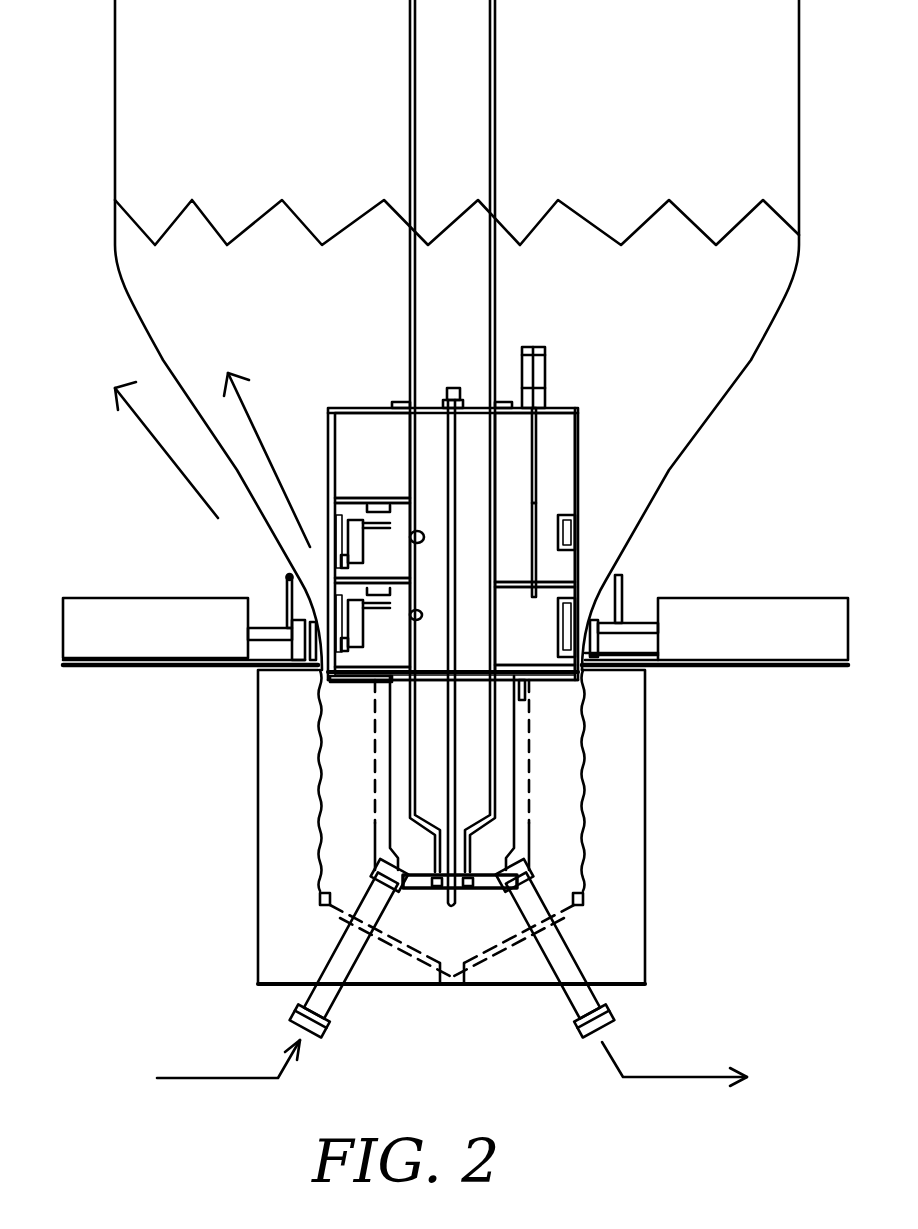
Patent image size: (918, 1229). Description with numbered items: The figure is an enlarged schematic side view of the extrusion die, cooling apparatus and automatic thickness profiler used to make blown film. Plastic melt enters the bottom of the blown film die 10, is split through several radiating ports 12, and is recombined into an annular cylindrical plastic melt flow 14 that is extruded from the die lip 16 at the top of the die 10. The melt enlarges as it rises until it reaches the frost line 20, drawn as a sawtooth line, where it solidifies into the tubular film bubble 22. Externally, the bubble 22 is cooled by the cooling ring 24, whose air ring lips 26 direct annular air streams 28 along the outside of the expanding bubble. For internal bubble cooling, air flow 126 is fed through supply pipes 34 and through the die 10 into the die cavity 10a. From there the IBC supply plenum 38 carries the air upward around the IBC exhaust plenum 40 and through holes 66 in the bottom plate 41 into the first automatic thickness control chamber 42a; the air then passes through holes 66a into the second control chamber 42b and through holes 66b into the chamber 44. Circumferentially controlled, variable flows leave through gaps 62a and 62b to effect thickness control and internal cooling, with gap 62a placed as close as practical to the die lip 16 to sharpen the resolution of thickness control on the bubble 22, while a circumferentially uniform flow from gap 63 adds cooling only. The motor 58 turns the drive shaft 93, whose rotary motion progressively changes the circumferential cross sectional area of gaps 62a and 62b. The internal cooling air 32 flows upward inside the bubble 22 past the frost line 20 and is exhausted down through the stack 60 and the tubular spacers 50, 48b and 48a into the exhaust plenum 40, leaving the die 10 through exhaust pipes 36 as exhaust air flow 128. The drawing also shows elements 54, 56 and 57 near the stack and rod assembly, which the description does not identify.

The blown film die 10 is at (648, 810).
The die cavity 10a is at (375, 823).
The ports 12 is at (335, 912).
The annular cylindrical plastic melt flow 14 is at (322, 742).
The die lip 16 is at (315, 678).
The frost line 20 is at (305, 236).
The film bubble 22 is at (115, 178).
The external air ring 24 is at (65, 630).
The air ring lips 26 is at (286, 580).
The annular air streams 28 is at (153, 438).
The internal cooling air 32 is at (252, 415).
The supply pipes 34 is at (330, 956).
The exhaust pipes 36 is at (572, 956).
The IBC supply plenum 38 is at (386, 768).
The IBC exhaust plenum 40 is at (516, 770).
The bottom plate 41 is at (350, 683).
The first automatic thickness control chamber 42a is at (588, 600).
The second control chamber 42b is at (588, 532).
The chamber 44 is at (602, 450).
The tubular spacer 48a is at (410, 616).
The tubular spacer 48b is at (410, 537).
The tubular spacer 50 is at (415, 440).
The passage 54 is at (458, 633).
The bolt 56 is at (445, 398).
The flange 57 is at (482, 404).
The motor 58 is at (548, 362).
The stack 60 is at (410, 290).
The gap 62a is at (340, 668).
The gap 62b is at (345, 580).
The gap 63 is at (338, 495).
The holes 66 is at (528, 704).
The holes 66a is at (580, 562).
The holes 66b is at (517, 503).
The drive shaft 93 is at (578, 418).
The air flow 126 is at (228, 1078).
The exhaust air flow 128 is at (655, 1077).